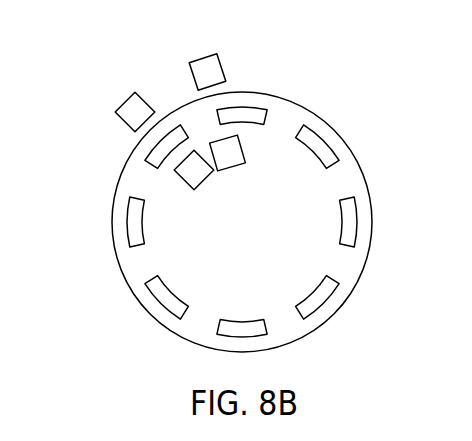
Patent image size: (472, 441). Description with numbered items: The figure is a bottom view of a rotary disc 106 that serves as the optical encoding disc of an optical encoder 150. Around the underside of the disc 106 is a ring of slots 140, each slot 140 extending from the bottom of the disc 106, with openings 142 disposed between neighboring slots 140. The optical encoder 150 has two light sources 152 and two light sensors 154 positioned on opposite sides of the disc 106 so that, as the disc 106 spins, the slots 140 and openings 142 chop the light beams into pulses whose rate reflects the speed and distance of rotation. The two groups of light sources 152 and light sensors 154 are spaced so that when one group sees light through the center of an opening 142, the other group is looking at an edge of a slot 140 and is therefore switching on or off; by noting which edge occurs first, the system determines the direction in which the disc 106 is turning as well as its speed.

The disc 106 is at (140, 305).
The slot 140 is at (322, 303).
The opening 142 is at (343, 262).
The optical encoder 150 is at (226, 185).
The light source 152 is at (208, 68).
The light sensor 154 is at (193, 173).